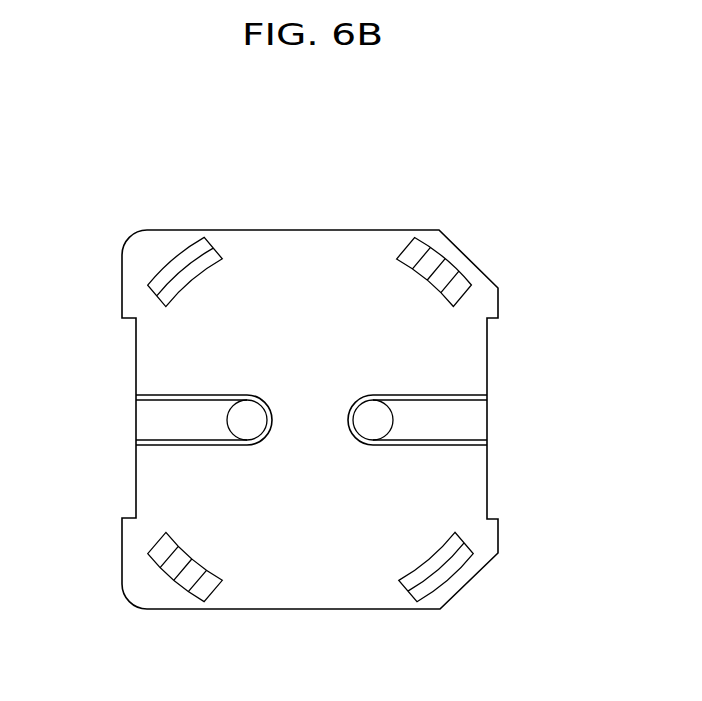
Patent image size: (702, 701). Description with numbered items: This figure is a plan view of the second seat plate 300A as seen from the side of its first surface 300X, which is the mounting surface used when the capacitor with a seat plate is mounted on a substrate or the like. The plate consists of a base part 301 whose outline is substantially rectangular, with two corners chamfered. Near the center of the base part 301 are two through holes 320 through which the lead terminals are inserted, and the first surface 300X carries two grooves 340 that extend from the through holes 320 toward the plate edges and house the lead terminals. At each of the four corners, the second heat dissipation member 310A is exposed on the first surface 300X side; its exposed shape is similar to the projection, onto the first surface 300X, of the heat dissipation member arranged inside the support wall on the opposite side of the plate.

The second seat plate 300A is at (345, 103).
The base part 301 is at (340, 265).
The first surface 300X is at (434, 341).
The second heat dissipation member 310A is at (180, 255).
The through holes 320 is at (254, 414).
The grooves 340 is at (442, 427).